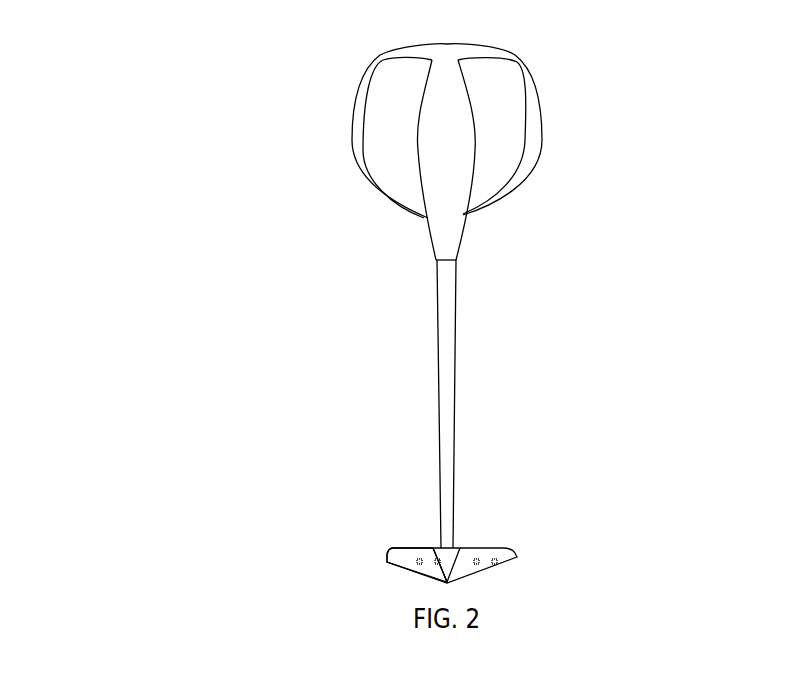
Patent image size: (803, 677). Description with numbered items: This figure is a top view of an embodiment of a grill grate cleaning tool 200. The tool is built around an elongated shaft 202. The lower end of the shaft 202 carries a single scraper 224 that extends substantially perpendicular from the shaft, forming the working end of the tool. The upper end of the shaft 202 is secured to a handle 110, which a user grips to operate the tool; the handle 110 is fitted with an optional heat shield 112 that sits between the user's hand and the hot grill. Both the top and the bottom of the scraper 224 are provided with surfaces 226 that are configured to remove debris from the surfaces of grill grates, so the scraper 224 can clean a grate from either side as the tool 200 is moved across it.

The grill cleaning tool 200 is at (192, 257).
The handle 110 is at (442, 205).
The heat shield 112 is at (393, 133).
The shaft 202 is at (462, 342).
The scraper 224 is at (510, 557).
The surfaces 226 is at (400, 558).